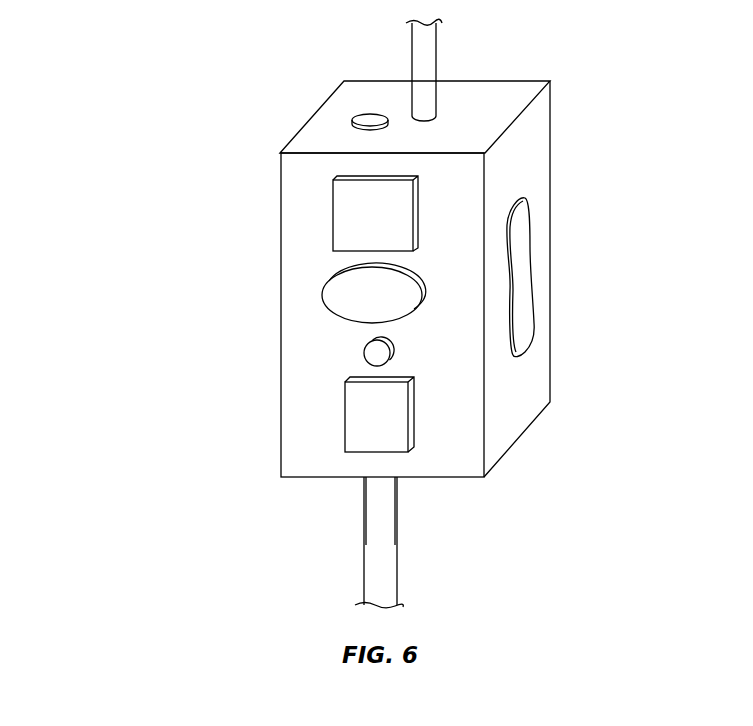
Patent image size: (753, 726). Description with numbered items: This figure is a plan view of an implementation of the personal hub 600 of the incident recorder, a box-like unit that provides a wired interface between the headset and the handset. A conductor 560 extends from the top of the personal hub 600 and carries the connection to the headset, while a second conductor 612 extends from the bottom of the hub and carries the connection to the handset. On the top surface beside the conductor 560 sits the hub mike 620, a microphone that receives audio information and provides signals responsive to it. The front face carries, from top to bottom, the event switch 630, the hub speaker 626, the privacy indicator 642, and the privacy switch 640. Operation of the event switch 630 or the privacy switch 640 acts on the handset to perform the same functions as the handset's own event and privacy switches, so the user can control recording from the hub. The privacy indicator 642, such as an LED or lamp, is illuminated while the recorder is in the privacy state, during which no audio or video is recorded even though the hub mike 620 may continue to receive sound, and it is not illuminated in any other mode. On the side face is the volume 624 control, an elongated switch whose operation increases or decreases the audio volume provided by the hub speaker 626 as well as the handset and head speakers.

The personal hub 600 is at (125, 90).
The conductor 560 is at (437, 53).
The hub mike 620 is at (352, 122).
The event switch 630 is at (333, 225).
The hub speaker 626 is at (322, 295).
The privacy indicator 642 is at (364, 353).
The privacy switch 640 is at (345, 430).
The volume 624 is at (535, 323).
The conductor 612 is at (397, 510).